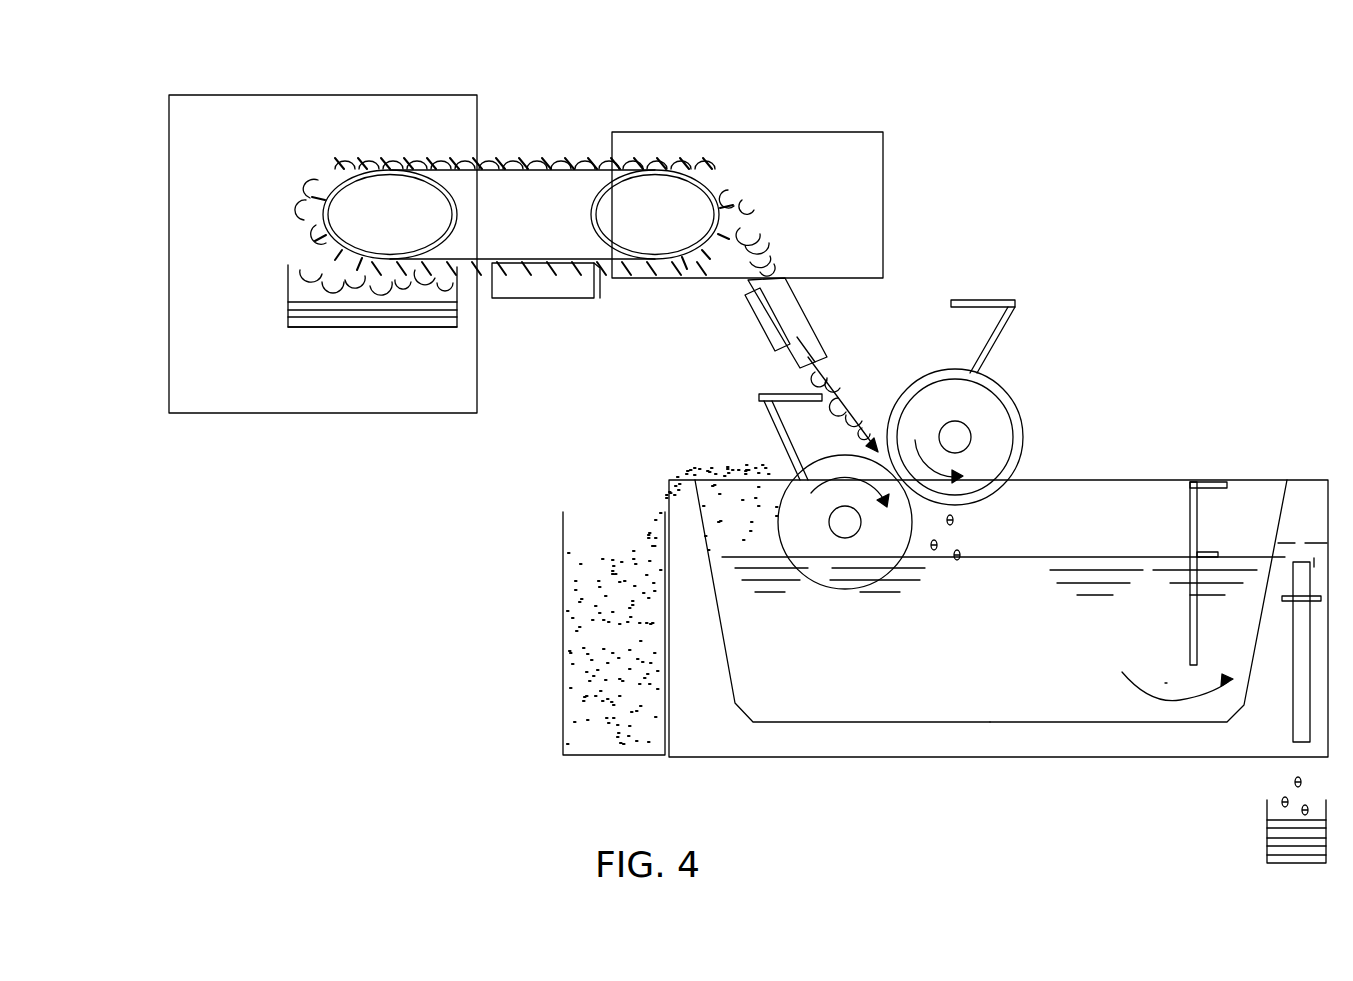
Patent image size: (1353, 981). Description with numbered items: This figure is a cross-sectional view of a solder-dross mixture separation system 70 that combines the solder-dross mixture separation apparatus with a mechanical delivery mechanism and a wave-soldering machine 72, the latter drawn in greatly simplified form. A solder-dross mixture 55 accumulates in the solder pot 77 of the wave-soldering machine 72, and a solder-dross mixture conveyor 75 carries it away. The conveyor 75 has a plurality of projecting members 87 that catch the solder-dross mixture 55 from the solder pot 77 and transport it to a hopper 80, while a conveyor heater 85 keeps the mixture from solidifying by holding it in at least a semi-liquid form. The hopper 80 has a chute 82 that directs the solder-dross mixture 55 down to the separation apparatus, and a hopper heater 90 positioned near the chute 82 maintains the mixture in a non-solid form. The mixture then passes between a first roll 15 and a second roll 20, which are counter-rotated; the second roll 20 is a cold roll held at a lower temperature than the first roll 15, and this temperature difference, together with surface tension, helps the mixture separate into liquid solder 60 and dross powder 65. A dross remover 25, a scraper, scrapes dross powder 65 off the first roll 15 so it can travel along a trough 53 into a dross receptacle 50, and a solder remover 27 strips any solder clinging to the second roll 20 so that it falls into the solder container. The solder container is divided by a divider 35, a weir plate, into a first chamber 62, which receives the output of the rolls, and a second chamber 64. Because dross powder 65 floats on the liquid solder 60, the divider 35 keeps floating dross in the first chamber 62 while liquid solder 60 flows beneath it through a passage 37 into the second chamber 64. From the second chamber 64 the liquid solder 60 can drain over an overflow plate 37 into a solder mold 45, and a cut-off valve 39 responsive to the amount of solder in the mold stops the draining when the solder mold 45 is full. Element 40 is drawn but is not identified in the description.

The first roll 15 is at (790, 478).
The second roll 20 is at (1020, 402).
The dross remover 25 is at (766, 394).
The solder remover 27 is at (978, 299).
The divider 35 is at (1198, 482).
The passage / overflow plate 37 is at (1287, 542).
The cut-off valve 39 is at (1282, 601).
The outlet plate 40 is at (1290, 670).
The solder mold 45 is at (1270, 864).
The dross receptacle 50 is at (572, 756).
The trough 53 is at (692, 487).
The solder-dross mixture 55 is at (302, 268).
The liquid solder 60 is at (300, 312).
The first chamber 62 is at (921, 688).
The second chamber 64 is at (1222, 702).
The dross powder 65 is at (628, 552).
The solder-dross mixture separation system 70 is at (417, 628).
The wave-soldering machine 72 is at (213, 413).
The solder-dross mixture conveyor 75 is at (380, 200).
The solder pot 77 is at (288, 278).
The hopper 80 is at (884, 182).
The chute 82 is at (800, 303).
The conveyor heater 85 is at (540, 299).
The projecting members 87 is at (597, 292).
The hopper heater 90 is at (747, 312).